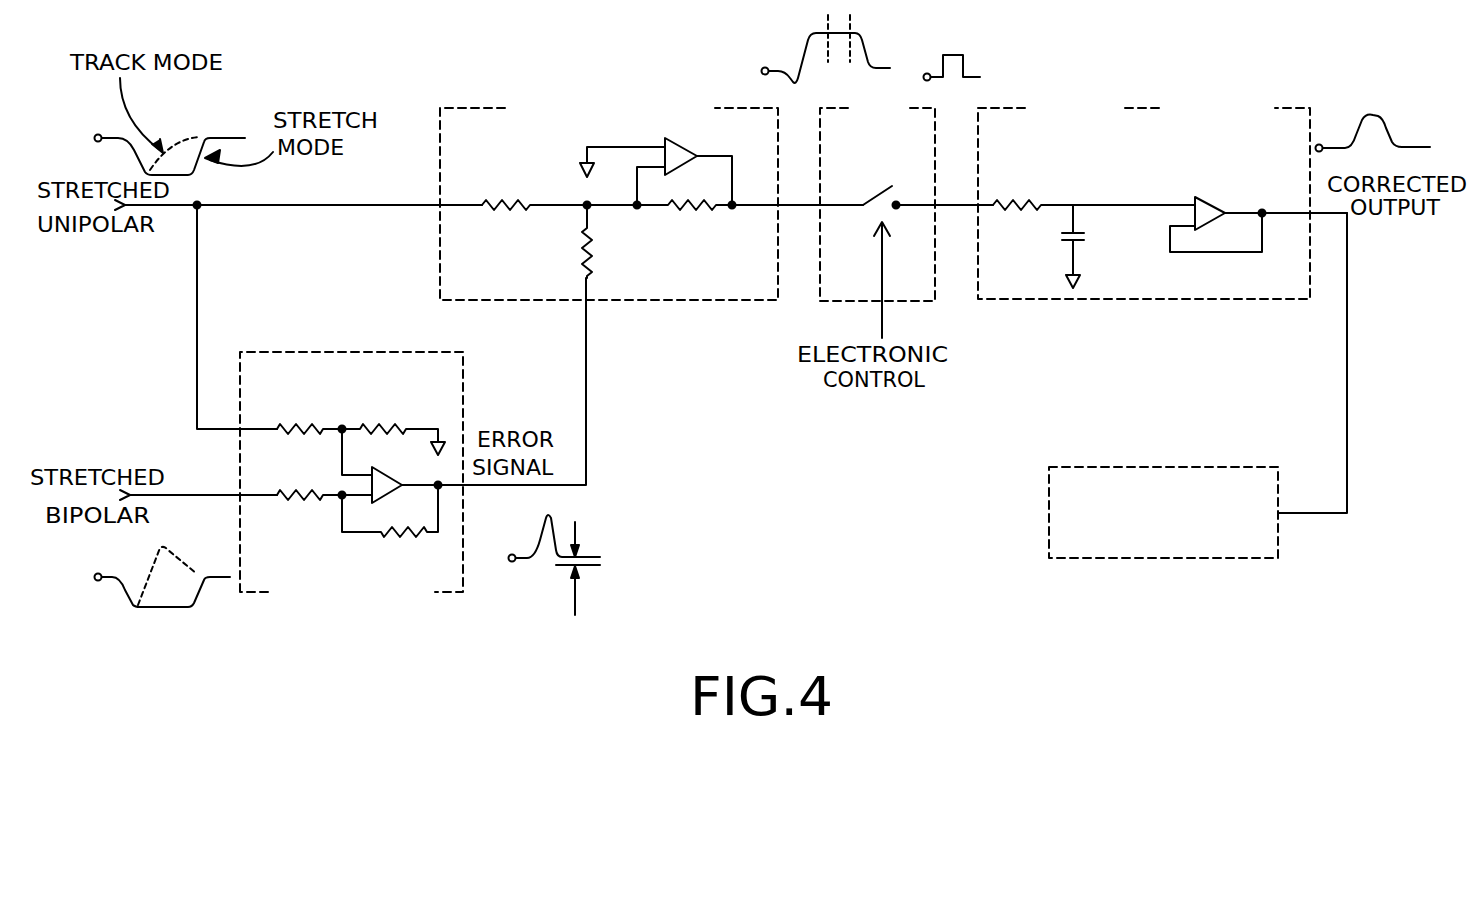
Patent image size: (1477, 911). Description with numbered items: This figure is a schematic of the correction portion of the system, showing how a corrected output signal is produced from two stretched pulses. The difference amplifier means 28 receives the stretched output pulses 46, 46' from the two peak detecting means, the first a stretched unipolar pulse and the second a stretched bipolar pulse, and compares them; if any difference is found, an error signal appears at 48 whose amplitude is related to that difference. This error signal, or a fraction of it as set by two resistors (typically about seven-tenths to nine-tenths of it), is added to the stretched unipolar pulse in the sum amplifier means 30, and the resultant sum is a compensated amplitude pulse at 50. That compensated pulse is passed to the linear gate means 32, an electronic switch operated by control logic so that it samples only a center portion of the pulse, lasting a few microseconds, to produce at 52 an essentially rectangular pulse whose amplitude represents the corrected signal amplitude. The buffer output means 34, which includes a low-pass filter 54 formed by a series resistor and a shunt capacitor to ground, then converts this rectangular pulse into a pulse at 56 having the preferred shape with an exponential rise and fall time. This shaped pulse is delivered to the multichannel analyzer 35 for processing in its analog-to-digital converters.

The difference amplifier means 28 is at (455, 592).
The sum amplifier means 30 is at (463, 108).
The linear gate means 32 is at (833, 303).
The buffer output means 34 is at (1093, 300).
The multichannel analyzer 35 is at (1135, 558).
The output pulse of peak detecting means 46 is at (298, 249).
The output pulse of peak detecting means 46' is at (198, 352).
The error signal output 48 is at (586, 416).
The compensated amplitude pulse 50 is at (800, 205).
The gate output pulse 52 is at (956, 205).
The low-pass filter 54 is at (1050, 223).
The corrected output pulse 56 is at (1347, 360).